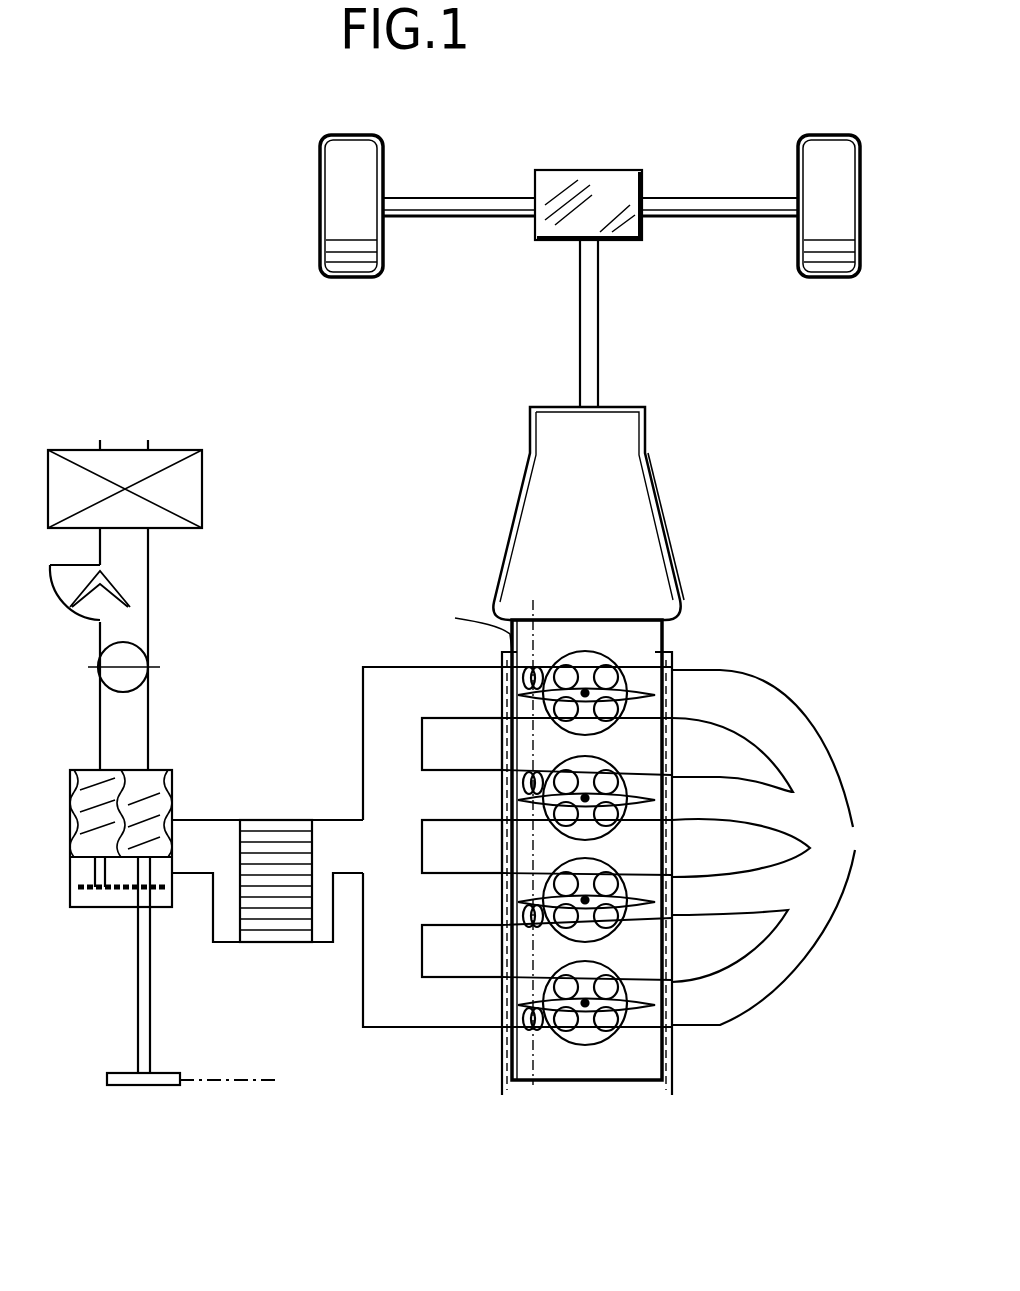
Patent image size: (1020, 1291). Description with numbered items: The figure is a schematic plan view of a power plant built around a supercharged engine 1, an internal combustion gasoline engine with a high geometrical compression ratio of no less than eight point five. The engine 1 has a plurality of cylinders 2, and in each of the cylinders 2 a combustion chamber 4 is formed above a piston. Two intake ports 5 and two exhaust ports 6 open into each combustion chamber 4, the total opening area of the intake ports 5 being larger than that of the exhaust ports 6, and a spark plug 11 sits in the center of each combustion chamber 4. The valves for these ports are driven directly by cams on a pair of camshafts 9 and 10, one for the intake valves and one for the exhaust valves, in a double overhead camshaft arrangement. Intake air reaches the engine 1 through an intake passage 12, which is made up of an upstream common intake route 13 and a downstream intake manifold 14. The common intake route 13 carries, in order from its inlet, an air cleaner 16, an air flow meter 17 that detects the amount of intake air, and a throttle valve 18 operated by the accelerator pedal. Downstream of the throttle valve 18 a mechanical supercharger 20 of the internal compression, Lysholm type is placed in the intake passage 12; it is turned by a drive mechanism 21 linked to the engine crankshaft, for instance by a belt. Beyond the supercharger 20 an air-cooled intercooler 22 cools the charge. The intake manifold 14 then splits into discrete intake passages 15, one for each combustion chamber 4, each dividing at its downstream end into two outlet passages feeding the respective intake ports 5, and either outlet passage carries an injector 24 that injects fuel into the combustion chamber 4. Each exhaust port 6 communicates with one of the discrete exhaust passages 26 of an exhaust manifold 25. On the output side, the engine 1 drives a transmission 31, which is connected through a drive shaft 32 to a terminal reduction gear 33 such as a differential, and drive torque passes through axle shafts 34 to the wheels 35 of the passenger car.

The engine 1 is at (688, 1087).
The cylinders 2 is at (655, 635).
The combustion chamber 4 is at (588, 655).
The intake ports 5 is at (540, 655).
The exhaust ports 6 is at (607, 660).
The camshaft 9 is at (502, 1076).
The camshaft 10 is at (672, 1043).
The spark plug 11 is at (668, 738).
The intake passage 12 is at (331, 815).
The common intake route 13 is at (150, 715).
The intake manifold 14 is at (368, 667).
The discrete intake passages 15 is at (443, 667).
The air cleaner 16 is at (203, 488).
The air flow meter 17 is at (70, 622).
The throttle valve 18 is at (150, 632).
The mechanical supercharger 20 is at (175, 790).
The drive mechanism 21 is at (204, 1066).
The intercooler 22 is at (290, 942).
The injector 24 is at (420, 1050).
The exhaust manifold 25 is at (823, 746).
The discrete exhaust passages 26 is at (715, 668).
The transmission 31 is at (655, 470).
The drive shaft 32 is at (598, 338).
The terminal reduction gear 33 is at (640, 240).
The axle shafts 34 is at (447, 218).
The wheels 35 is at (362, 278).